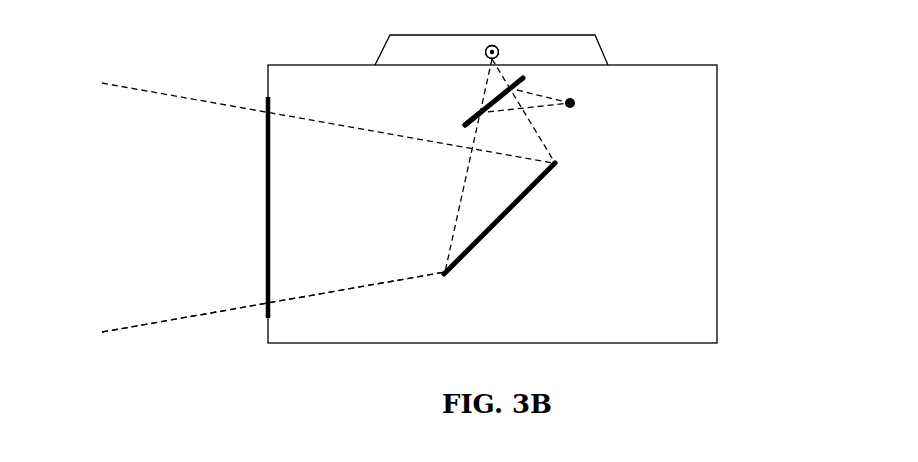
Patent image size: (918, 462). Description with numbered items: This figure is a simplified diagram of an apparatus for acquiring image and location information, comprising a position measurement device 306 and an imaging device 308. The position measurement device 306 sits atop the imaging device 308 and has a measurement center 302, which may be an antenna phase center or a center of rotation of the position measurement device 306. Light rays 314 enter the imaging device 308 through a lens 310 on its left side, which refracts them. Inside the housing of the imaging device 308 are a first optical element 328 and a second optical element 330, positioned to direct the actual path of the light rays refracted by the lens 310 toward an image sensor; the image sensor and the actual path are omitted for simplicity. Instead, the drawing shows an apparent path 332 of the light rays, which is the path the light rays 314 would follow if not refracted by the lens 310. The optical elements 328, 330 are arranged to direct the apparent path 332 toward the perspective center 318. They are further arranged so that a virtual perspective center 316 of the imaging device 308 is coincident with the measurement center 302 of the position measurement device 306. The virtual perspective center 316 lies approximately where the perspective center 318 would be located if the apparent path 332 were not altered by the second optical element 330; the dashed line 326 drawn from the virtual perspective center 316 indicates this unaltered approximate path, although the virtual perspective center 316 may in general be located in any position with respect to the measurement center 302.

The measurement center 302 is at (485, 53).
The position measurement device 306 is at (603, 50).
The imaging device 308 is at (717, 237).
The lens 310 is at (268, 210).
The light rays 314 is at (160, 94).
The virtual perspective center 316 is at (499, 52).
The perspective center 318 is at (575, 108).
The beam splitter 326 is at (485, 85).
The first optical element 328 is at (498, 220).
The second optical element 330 is at (466, 118).
The apparent path 332 is at (340, 289).